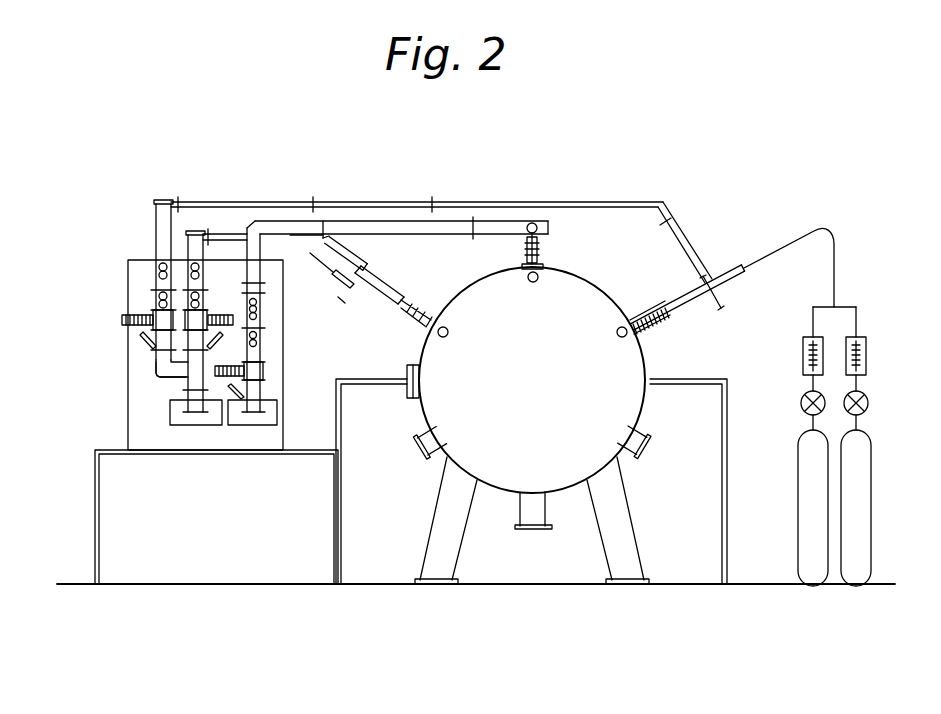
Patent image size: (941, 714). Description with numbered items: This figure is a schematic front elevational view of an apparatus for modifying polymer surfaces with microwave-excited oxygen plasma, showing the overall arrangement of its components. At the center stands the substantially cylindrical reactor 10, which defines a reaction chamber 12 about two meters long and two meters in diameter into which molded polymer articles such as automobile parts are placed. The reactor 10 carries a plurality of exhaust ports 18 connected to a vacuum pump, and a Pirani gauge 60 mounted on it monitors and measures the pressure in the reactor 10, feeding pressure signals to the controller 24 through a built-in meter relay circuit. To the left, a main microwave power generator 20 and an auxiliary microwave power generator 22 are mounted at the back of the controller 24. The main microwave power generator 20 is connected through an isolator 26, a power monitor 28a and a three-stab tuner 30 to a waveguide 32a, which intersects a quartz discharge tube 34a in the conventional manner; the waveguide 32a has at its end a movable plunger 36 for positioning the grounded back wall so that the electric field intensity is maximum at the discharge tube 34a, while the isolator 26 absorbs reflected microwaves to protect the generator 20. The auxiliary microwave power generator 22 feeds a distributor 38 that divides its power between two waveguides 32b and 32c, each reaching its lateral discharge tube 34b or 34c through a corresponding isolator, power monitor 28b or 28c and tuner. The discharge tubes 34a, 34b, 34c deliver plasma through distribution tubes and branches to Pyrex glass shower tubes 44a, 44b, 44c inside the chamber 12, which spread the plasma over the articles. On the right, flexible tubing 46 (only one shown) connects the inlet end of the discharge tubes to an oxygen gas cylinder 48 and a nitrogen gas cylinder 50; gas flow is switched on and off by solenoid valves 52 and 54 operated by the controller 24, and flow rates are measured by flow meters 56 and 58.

The reactor 10 is at (597, 291).
The reaction chamber 12 is at (549, 467).
The exhaust ports 18 is at (432, 455).
The main microwave power generator 20 is at (238, 421).
The auxiliary microwave power generator 22 is at (207, 421).
The controller 24 is at (125, 367).
The isolator 26 is at (255, 373).
The power monitor 28a is at (262, 343).
The power monitor 28b is at (188, 298).
The power monitor 28c is at (153, 298).
The three-stab tuner 30 is at (262, 313).
The waveguide 32a is at (448, 237).
The waveguide 32b is at (238, 204).
The waveguide 32c is at (571, 203).
The quartz discharge tube 34a is at (530, 223).
The lateral discharge tube 34b is at (392, 297).
The lateral discharge tube 34c is at (729, 270).
The movable plunger 36 is at (617, 207).
The distributor 38 is at (192, 378).
The shower tube 44a is at (533, 283).
The shower tube 44b is at (446, 337).
The shower tube 44c is at (619, 337).
The flexible tubing 46 is at (801, 229).
The oxygen gas cylinder 48 is at (802, 586).
The nitrogen gas cylinder 50 is at (866, 586).
The solenoid valve 52 is at (801, 403).
The solenoid valve 54 is at (868, 403).
The flow meter 56 is at (803, 355).
The flow meter 58 is at (867, 357).
The Pirani gauge 60 is at (404, 393).